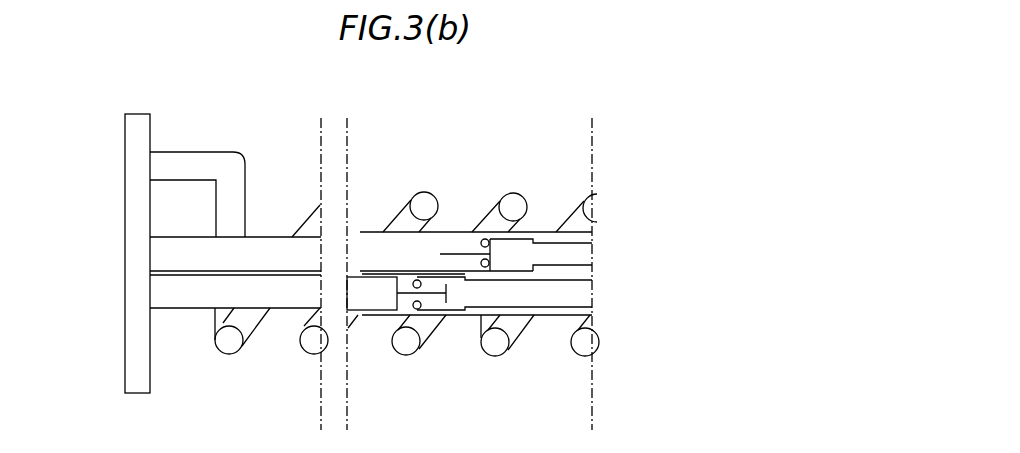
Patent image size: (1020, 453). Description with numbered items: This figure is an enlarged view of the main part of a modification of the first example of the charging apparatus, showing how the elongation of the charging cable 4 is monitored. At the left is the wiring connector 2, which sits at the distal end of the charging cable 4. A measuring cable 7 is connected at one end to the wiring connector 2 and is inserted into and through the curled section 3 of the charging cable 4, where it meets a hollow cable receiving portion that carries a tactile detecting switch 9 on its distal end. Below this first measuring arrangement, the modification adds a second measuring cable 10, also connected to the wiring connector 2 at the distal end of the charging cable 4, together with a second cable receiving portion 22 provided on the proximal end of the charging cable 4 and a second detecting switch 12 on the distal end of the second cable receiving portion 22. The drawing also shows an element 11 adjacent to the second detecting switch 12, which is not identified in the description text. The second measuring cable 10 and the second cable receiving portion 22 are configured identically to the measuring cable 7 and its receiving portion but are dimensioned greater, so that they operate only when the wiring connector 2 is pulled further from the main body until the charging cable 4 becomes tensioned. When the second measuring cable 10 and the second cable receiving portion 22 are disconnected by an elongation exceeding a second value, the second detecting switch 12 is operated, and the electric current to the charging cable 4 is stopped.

The wiring connector 2 is at (125, 158).
The curled section 3 is at (429, 181).
The charging cable 4 is at (492, 347).
The measuring cable 7 is at (190, 242).
The detecting switch 9 is at (494, 251).
The second measuring cable 10 is at (180, 302).
The slider block 11 is at (395, 278).
The second detecting switch 12 is at (436, 303).
The second cable receiving portion 22 is at (550, 317).